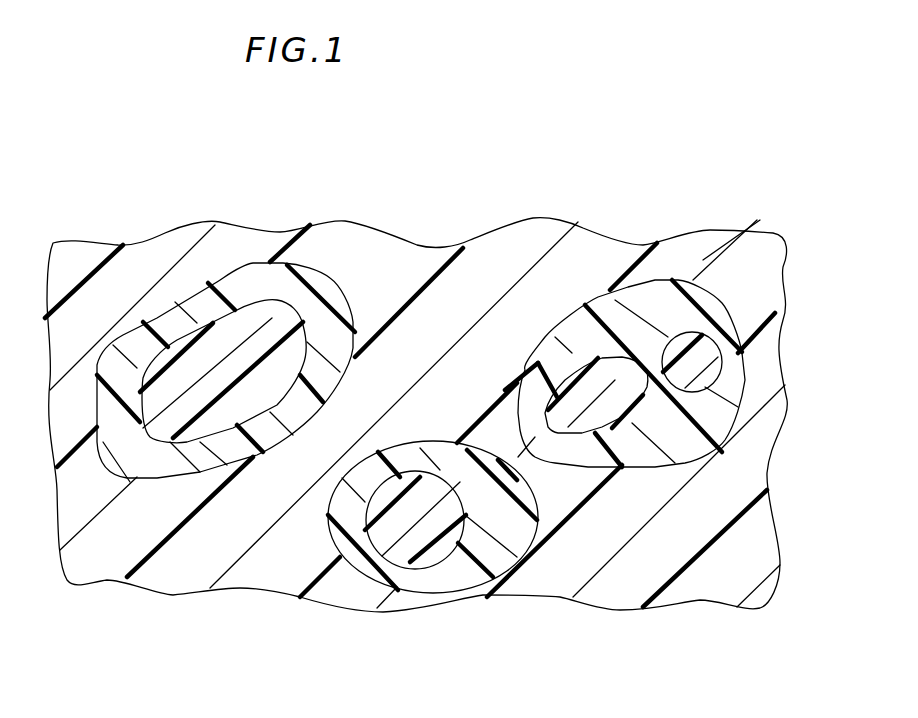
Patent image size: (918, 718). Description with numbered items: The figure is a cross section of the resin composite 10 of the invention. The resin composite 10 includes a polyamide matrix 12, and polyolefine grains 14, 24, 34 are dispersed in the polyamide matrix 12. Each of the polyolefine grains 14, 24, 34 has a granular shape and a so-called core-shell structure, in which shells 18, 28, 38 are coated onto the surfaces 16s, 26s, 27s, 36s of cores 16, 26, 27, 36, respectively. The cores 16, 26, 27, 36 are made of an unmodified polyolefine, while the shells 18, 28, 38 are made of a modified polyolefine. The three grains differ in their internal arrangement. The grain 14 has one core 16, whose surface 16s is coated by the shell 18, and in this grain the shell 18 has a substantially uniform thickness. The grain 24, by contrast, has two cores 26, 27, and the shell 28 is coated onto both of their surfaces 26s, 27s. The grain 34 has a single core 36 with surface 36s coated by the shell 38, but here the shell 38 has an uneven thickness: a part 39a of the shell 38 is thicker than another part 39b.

The resin composite 10 is at (118, 603).
The polyamide matrix 12 is at (418, 263).
The polyolefine grain 14 is at (323, 260).
The core 16 is at (233, 355).
The surface of core 16s is at (170, 350).
The shell 18 is at (250, 285).
The polyolefine grain 24 is at (738, 302).
The core 26 is at (687, 360).
The surface of core 26s is at (678, 345).
The core 27 is at (607, 372).
The surface of core 27s is at (615, 330).
The shell 28 is at (578, 327).
The polyolefine grain 34 is at (540, 563).
The core 36 is at (424, 533).
The surface of core 36s is at (405, 570).
The shell 38 is at (487, 547).
The thicker part of shell 39a is at (562, 550).
The thinner part of shell 39b is at (364, 563).